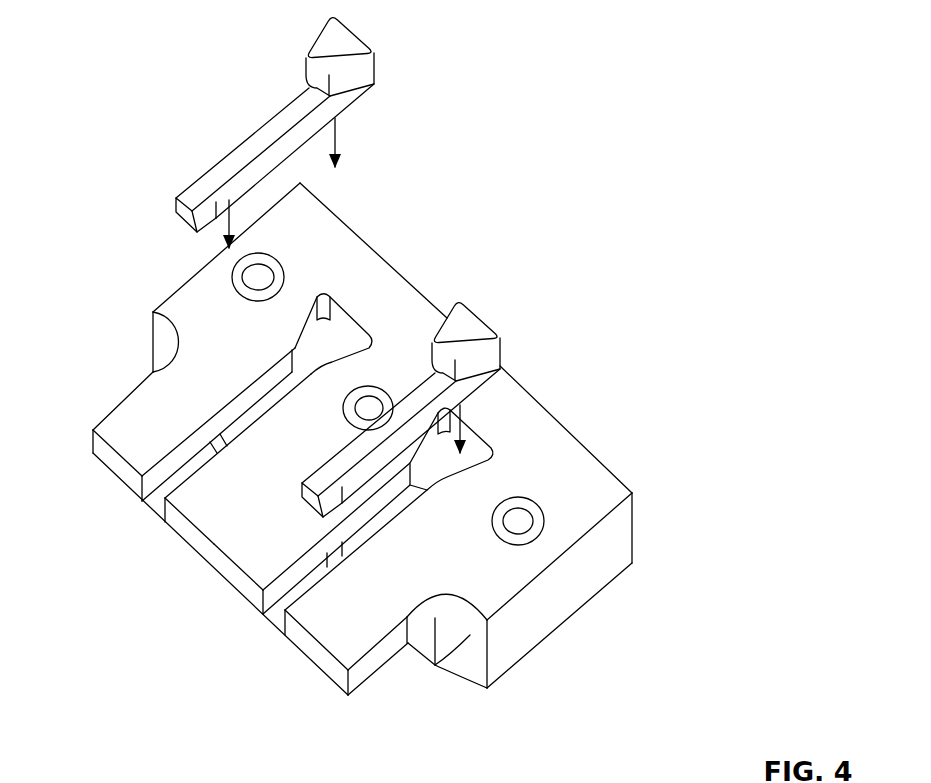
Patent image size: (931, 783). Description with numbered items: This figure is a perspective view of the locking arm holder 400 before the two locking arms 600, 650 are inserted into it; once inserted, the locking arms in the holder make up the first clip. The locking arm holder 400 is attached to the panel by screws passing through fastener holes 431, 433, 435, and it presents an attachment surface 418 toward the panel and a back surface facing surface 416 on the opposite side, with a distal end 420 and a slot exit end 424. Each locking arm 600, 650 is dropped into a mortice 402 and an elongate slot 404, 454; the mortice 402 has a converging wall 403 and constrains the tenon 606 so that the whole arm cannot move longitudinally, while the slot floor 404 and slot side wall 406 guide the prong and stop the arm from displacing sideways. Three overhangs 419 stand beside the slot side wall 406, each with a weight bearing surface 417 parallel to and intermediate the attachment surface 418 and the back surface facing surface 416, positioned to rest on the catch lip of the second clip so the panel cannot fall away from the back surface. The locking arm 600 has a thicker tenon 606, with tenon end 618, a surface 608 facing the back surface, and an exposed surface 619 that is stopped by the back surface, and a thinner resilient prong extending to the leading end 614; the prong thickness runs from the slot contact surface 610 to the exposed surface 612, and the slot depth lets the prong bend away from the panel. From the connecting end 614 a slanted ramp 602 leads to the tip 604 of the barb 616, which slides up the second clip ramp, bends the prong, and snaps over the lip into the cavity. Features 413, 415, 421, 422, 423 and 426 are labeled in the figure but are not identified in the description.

The locking arm holder 400 is at (117, 362).
The locking arm holder mortice 402 is at (325, 337).
The locking arm holder mortice converging wall 403 is at (300, 337).
The locking arm holder slot floor 404 is at (248, 417).
The locking arm holder slot side wall 406 is at (263, 378).
The flange 413 is at (132, 425).
The rail top surface 415 is at (212, 522).
The locking arm holder back surface facing surface 416 is at (570, 473).
The weight bearing surface 417 is at (436, 665).
The locking arm holder attachment surface 418 is at (597, 595).
The overhang 419 is at (360, 671).
The locking arm holder distal end 420 is at (557, 417).
The side face 421 is at (315, 655).
The rail 422 is at (218, 560).
The end face 423 is at (117, 468).
The locking arm holder slot exit end 424 is at (157, 512).
The slot 426 is at (277, 616).
The locking arm holder fastener hole 431 is at (274, 271).
The locking arm holder fastener hole 433 is at (377, 392).
The locking arm holder fastener hole 435 is at (497, 511).
The locking arm holder second slot 454 is at (350, 547).
The locking arm 600 is at (284, 97).
The locking arm ramp 602 is at (186, 229).
The locking arm barb tip 604 is at (210, 230).
The locking arm tenon 606 is at (332, 33).
The locking arm tenon exposed portion 608 is at (368, 149).
The locking arm slot contact surface 610 is at (260, 137).
The locking arm prong exposed portion 612 is at (208, 183).
The locking arm leading end 614 is at (176, 212).
The locking arm barb 616 is at (217, 200).
The locking arm tenon end 618 is at (340, 76).
The locking arm exposed surface 619 is at (317, 62).
The locking arm 650 is at (460, 328).